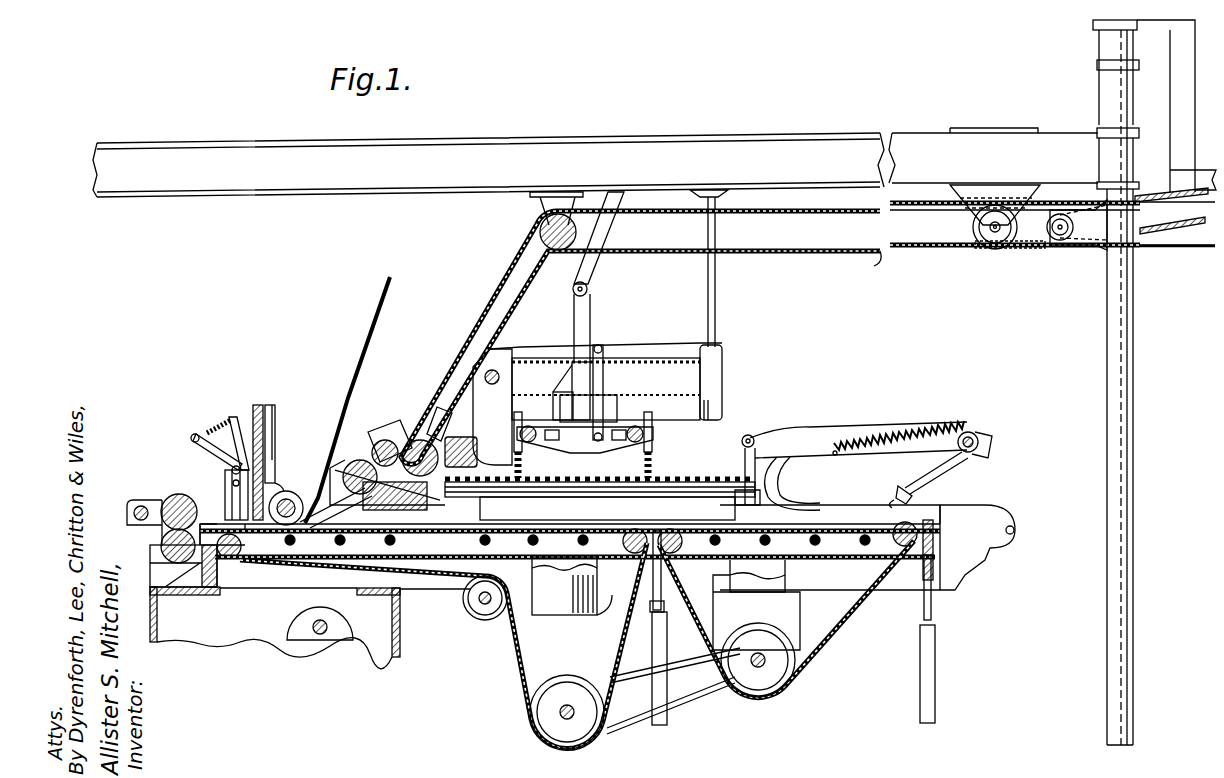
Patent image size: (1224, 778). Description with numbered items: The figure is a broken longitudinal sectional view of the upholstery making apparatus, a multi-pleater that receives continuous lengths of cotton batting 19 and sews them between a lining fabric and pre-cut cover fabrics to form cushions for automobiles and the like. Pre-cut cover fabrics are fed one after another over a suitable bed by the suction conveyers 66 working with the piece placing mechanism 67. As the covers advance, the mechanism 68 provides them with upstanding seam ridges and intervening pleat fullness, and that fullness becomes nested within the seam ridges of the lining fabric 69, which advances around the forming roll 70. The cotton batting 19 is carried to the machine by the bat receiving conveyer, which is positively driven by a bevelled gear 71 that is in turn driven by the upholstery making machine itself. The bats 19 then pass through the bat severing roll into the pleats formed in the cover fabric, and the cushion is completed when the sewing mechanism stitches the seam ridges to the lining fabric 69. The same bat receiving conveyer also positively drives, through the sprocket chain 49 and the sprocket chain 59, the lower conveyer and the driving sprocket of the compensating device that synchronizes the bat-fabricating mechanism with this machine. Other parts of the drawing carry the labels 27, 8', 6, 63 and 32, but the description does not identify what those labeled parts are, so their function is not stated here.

The track beam / column 27 is at (545, 150).
The cotton batting 19 is at (505, 280).
The chain run end 8' is at (861, 268).
The bevelled gear 71 is at (579, 231).
The mechanism 68 is at (655, 437).
The suction conveyers 66 is at (512, 648).
The piece placing mechanism 67 is at (793, 437).
The frame 6 is at (276, 648).
The forming roll 70 is at (292, 491).
The lining fabric 69 is at (355, 368).
The roller assembly 63 is at (225, 487).
The sprocket chain 49 is at (1035, 249).
The sprocket chain 59 is at (1190, 190).
The bar 32 is at (1200, 249).